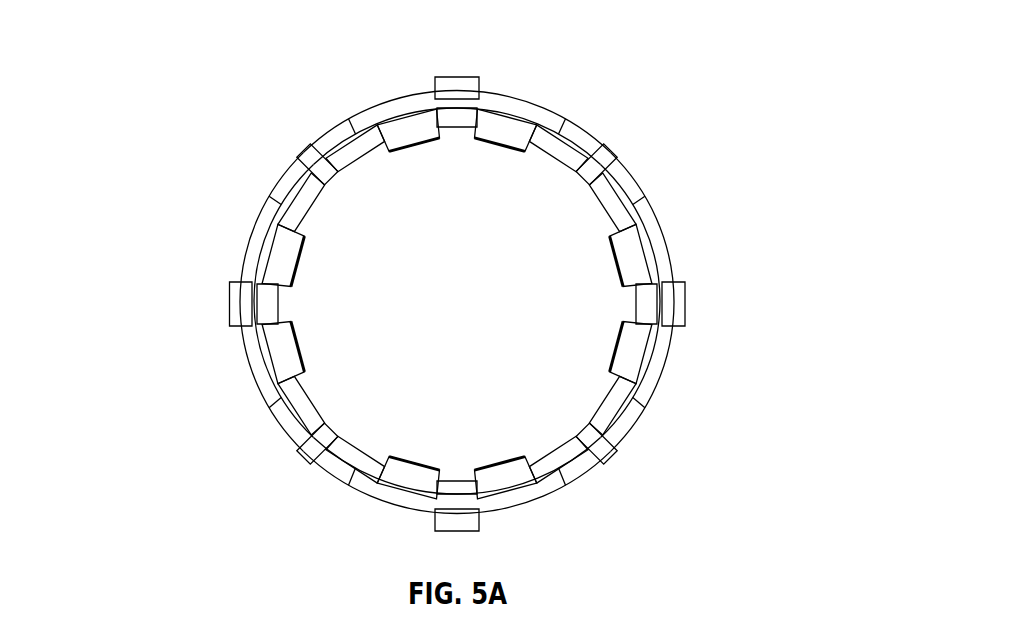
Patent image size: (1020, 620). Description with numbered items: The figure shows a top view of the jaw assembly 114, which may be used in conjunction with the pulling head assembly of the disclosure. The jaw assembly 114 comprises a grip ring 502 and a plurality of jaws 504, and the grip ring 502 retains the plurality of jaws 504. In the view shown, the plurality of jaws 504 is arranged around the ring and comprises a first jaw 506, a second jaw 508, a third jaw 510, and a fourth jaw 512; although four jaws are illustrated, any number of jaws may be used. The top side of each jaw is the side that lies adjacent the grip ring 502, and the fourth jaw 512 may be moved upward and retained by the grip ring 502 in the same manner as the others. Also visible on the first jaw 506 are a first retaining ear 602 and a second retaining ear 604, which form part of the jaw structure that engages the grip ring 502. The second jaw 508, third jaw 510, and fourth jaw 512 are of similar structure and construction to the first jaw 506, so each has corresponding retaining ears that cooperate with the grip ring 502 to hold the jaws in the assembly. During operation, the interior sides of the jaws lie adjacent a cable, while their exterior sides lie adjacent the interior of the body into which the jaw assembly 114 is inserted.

The jaw assembly 114 is at (266, 53).
The plurality of jaws 504 is at (616, 29).
The first jaw 506 is at (365, 116).
The grip ring 502 is at (500, 130).
The first retaining ear 602 is at (316, 142).
The second retaining ear 604 is at (598, 133).
The fourth jaw 512 is at (676, 250).
The second jaw 508 is at (252, 372).
The third jaw 510 is at (533, 506).